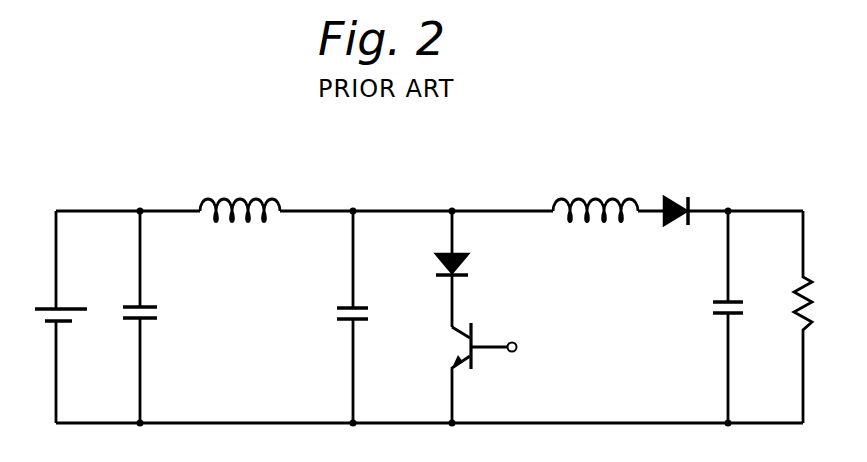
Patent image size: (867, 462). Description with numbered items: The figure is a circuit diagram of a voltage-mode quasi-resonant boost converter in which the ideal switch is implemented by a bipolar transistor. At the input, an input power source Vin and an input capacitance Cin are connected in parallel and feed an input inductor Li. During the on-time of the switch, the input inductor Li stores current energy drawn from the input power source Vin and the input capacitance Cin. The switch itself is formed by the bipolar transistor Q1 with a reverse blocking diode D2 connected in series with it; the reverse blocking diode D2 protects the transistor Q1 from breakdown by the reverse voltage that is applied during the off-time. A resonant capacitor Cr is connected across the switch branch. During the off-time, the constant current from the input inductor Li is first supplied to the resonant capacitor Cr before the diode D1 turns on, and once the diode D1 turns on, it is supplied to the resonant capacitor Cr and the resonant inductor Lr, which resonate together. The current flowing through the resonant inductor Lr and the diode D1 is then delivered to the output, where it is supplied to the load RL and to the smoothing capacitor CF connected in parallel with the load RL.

The input power source Vin is at (45, 315).
The input capacitance Cin is at (157, 318).
The input inductor Li is at (228, 206).
The resonant capacitor Cr is at (335, 314).
The reverse blocking diode D2 is at (468, 259).
The bipolar transistor Q1 is at (462, 344).
The resonant inductor Lr is at (589, 204).
The diode D1 is at (674, 203).
The smoothing capacitor CF is at (744, 298).
The load RL is at (801, 315).